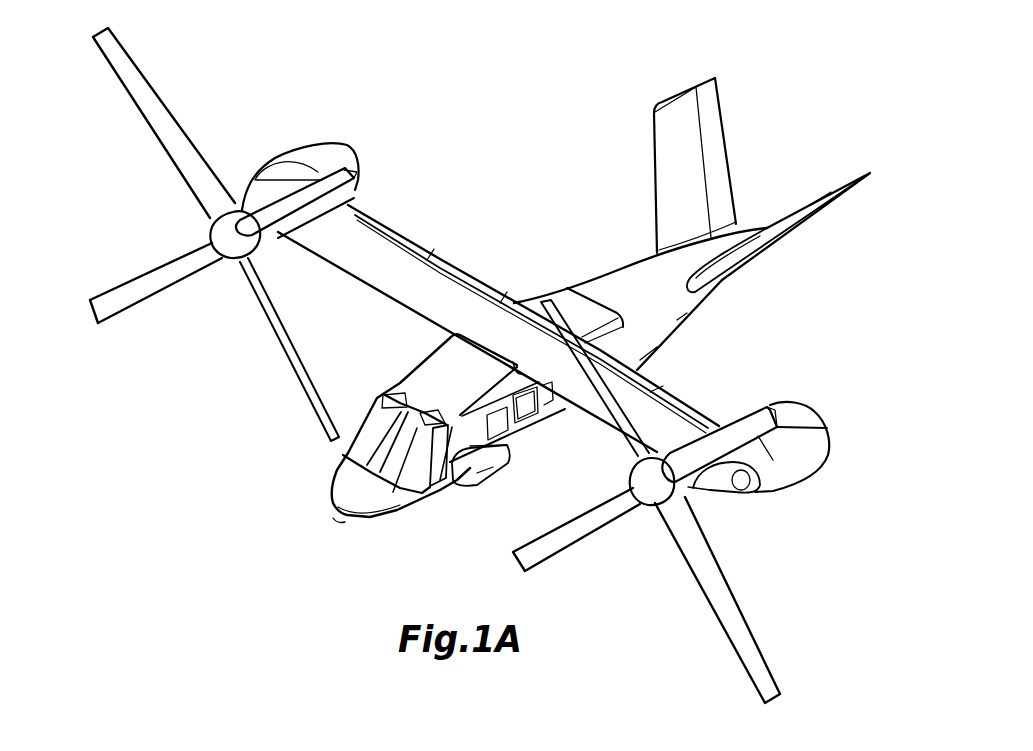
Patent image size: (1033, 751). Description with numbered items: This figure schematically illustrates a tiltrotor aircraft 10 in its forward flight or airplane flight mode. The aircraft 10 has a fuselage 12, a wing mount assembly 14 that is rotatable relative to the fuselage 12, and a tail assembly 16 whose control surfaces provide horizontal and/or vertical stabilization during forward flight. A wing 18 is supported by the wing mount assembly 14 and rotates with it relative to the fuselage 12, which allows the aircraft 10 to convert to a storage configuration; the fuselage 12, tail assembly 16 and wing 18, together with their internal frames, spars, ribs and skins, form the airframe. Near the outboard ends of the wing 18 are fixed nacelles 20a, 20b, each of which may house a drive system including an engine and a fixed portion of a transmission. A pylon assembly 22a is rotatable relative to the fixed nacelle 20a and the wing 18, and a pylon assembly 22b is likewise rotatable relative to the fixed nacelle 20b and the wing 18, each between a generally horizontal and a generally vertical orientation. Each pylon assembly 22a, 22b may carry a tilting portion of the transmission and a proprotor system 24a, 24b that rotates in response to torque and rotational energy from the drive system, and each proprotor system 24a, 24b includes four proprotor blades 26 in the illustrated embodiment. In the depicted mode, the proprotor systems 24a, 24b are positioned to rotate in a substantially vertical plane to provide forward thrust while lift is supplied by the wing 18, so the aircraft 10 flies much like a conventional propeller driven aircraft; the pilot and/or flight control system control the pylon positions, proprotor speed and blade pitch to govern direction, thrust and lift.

The tiltrotor aircraft 10 is at (513, 178).
The fuselage 12 is at (626, 282).
The wing mount assembly 14 is at (443, 362).
The tail assembly 16 is at (719, 162).
The wing 18 is at (390, 260).
The fixed nacelle 20a is at (793, 421).
The fixed nacelle 20b is at (310, 158).
The pylon assembly 22a is at (717, 424).
The pylon assembly 22b is at (278, 182).
The proprotor system 24a is at (646, 509).
The proprotor system 24b is at (227, 266).
The proprotor blades 26 is at (126, 284).